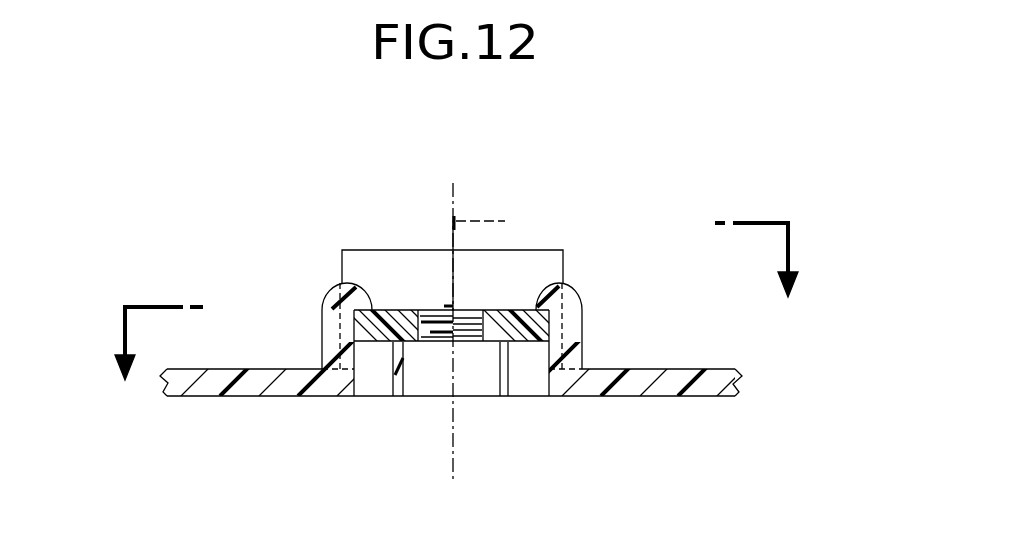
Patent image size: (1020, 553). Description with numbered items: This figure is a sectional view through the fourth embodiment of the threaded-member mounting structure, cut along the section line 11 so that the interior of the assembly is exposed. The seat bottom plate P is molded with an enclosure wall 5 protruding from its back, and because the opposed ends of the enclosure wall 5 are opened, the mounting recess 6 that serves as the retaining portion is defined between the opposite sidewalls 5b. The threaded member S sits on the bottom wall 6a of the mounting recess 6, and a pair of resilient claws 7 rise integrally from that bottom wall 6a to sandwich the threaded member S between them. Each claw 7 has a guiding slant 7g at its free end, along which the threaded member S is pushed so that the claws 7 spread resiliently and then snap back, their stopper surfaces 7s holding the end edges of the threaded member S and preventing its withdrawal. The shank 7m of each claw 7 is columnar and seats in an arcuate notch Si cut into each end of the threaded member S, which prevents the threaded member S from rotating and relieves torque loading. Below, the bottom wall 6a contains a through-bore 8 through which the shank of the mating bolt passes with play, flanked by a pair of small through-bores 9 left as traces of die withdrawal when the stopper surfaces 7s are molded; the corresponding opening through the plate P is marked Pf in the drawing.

The enclosure wall 5 is at (514, 245).
The opposite sidewalls 5b is at (408, 251).
The mounting recess 6 is at (404, 332).
The bottom wall 6a is at (394, 390).
The resilient claw 7 is at (308, 323).
The guiding slant 7g is at (363, 300).
The shank 7m is at (320, 339).
The stopper surface 7s is at (387, 318).
The through-bore 8 is at (500, 370).
The small through-bore 9 is at (378, 387).
The section line 11- 11 is at (454, 265).
The seat bottom plate P is at (714, 363).
The panel hole Pf is at (508, 394).
The threaded member S is at (365, 352).
The arcuate notch Si is at (336, 322).